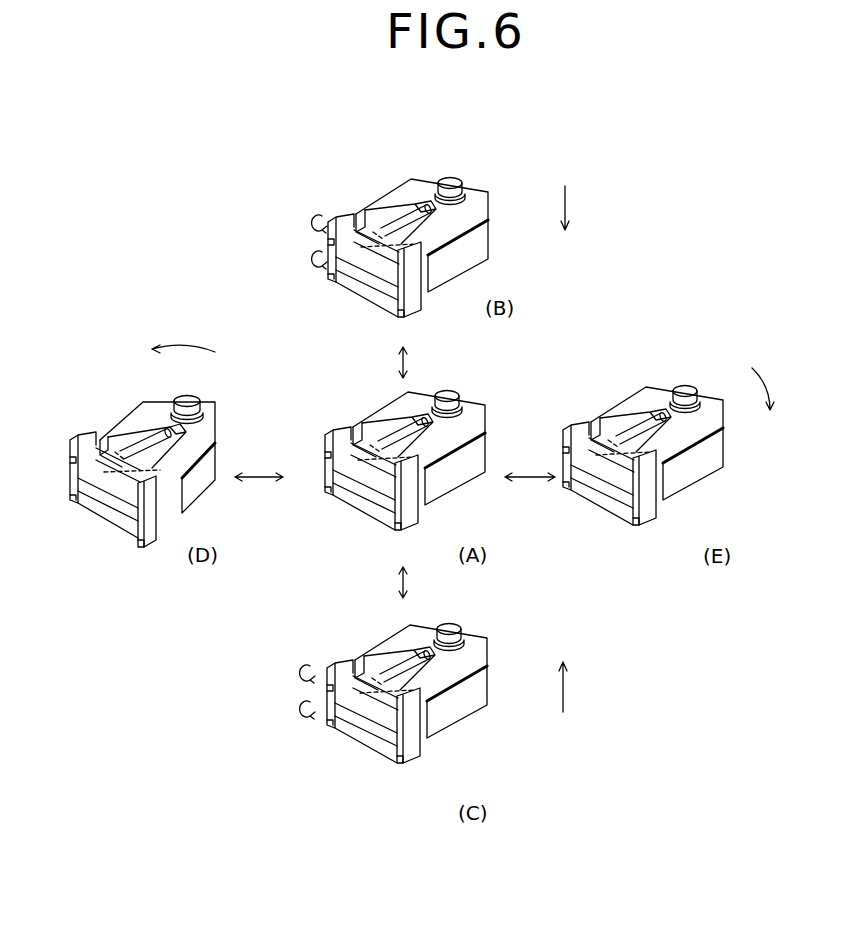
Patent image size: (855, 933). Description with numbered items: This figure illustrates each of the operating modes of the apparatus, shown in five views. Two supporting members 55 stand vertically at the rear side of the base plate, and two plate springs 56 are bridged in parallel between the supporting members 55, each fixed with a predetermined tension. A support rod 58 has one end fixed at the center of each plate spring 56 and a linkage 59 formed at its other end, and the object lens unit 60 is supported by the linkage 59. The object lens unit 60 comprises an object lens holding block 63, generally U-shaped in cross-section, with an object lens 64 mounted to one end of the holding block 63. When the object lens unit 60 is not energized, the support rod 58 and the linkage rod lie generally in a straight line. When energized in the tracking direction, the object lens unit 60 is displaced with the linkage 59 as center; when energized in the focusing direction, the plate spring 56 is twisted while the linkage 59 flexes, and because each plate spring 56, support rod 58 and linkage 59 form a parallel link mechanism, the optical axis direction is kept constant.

The supporting member 55 is at (399, 532).
The plate spring 56 is at (325, 482).
The support rod 58 is at (92, 401).
The linkage 59 is at (410, 447).
The object lens unit 60 is at (472, 500).
The object lens holding block 63 is at (488, 450).
The object lens 64 is at (456, 393).